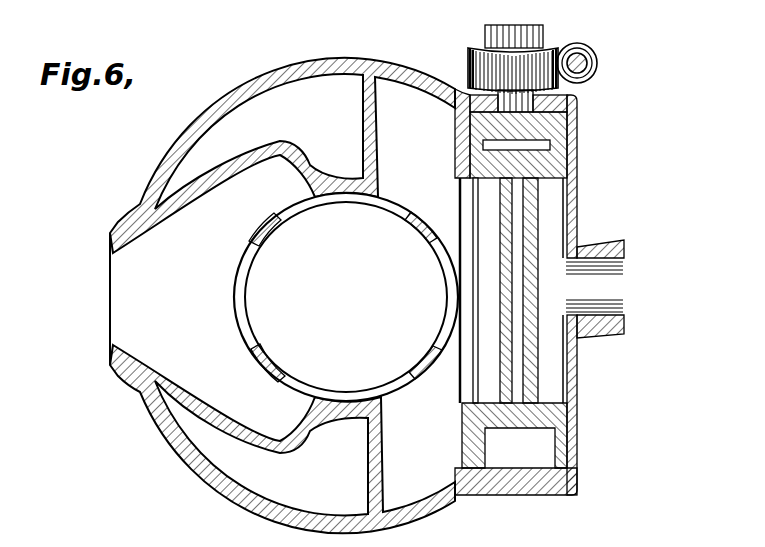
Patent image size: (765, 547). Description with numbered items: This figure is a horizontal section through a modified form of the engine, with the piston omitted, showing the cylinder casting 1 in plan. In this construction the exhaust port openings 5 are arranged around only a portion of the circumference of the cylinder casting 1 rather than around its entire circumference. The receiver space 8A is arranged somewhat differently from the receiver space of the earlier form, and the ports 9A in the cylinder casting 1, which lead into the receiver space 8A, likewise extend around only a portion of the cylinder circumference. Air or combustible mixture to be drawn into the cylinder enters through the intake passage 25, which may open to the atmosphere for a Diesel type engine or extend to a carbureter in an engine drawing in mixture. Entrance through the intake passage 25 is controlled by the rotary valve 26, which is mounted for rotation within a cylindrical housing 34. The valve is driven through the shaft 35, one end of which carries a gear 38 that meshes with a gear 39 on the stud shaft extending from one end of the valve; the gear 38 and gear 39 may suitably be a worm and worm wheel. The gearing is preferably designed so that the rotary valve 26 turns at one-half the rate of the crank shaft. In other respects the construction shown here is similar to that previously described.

The cylinder casting 1 is at (291, 352).
The exhaust openings 5 is at (260, 216).
The receiver space 8A is at (398, 98).
The ports 9A is at (345, 282).
The intake passage 25 is at (624, 248).
The rotary valve 26 is at (576, 412).
The cylindrical housing 34 is at (490, 488).
The shaft 35 is at (591, 69).
The gear 38 is at (585, 71).
The gear 39 is at (472, 62).